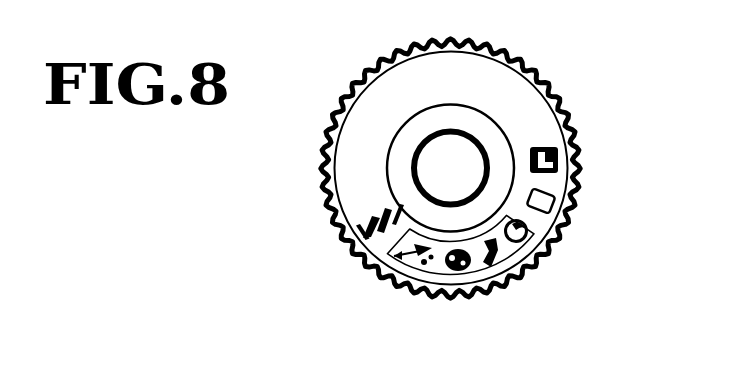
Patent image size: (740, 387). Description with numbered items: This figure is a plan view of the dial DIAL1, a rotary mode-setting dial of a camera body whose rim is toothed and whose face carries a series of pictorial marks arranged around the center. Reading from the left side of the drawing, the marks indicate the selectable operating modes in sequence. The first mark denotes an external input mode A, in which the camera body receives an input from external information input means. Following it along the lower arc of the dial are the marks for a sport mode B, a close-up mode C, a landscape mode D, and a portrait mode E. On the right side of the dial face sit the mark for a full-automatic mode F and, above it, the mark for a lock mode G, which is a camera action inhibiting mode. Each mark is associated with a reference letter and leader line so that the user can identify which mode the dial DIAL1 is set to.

The dial DIAL1 is at (528, 94).
The external input mode A is at (373, 243).
The sport mode B is at (399, 256).
The close-up mode C is at (453, 262).
The landscape mode D is at (495, 263).
The portrait mode E is at (527, 237).
The full-automatic mode F is at (555, 203).
The lock mode G is at (558, 156).